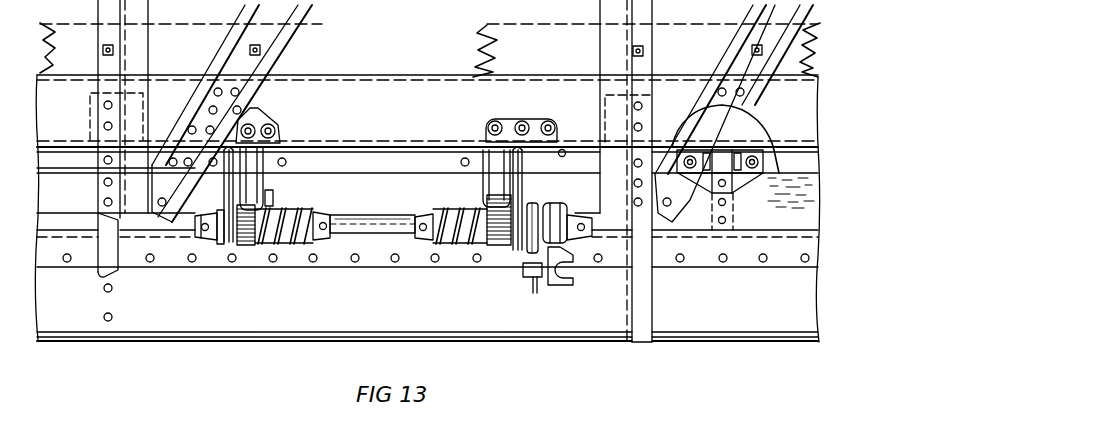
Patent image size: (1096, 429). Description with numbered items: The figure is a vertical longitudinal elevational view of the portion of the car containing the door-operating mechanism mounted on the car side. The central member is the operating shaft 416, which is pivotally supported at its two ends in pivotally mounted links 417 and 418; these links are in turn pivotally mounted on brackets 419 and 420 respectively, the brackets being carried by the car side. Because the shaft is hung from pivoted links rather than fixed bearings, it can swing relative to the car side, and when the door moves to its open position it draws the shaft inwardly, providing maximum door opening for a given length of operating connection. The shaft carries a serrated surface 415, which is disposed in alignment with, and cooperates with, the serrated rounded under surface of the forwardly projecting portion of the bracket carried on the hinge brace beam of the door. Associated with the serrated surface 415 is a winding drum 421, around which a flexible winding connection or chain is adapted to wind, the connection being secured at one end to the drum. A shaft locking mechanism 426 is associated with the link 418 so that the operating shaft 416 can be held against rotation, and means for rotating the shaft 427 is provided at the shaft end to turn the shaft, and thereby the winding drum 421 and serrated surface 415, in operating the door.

The serrated surface 415 is at (246, 247).
The operating shaft 416 is at (368, 234).
The link 417 is at (224, 185).
The link 418 is at (541, 172).
The bracket 419 is at (258, 114).
The bracket 420 is at (486, 127).
The winding drum 421 is at (295, 246).
The shaft locking mechanism 426 is at (516, 248).
The means for rotating the shaft 427 is at (557, 270).